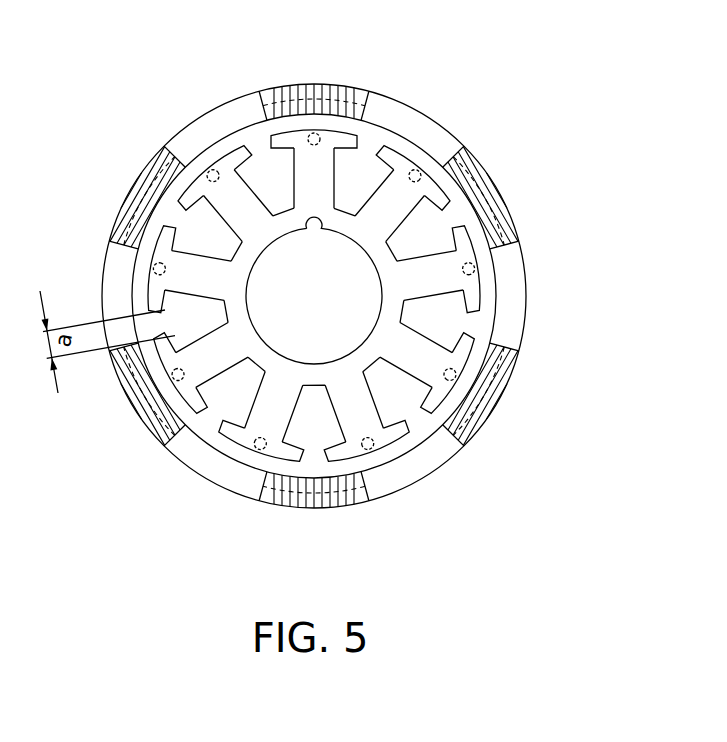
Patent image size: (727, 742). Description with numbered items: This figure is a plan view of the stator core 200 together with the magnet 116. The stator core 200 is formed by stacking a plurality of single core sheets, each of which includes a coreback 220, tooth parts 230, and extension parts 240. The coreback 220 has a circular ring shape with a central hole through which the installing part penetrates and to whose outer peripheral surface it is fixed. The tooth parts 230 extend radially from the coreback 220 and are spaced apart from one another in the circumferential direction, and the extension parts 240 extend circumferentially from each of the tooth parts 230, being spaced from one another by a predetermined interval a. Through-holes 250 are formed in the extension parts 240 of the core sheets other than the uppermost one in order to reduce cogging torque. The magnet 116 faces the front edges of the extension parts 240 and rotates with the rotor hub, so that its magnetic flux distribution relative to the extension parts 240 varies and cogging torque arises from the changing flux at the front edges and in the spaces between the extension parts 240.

The magnet 116 is at (340, 507).
The stator core 200 is at (331, 290).
The coreback 220 is at (340, 217).
The tooth parts 230 is at (310, 174).
The extension parts 240 is at (197, 197).
The through-holes 250 is at (257, 452).